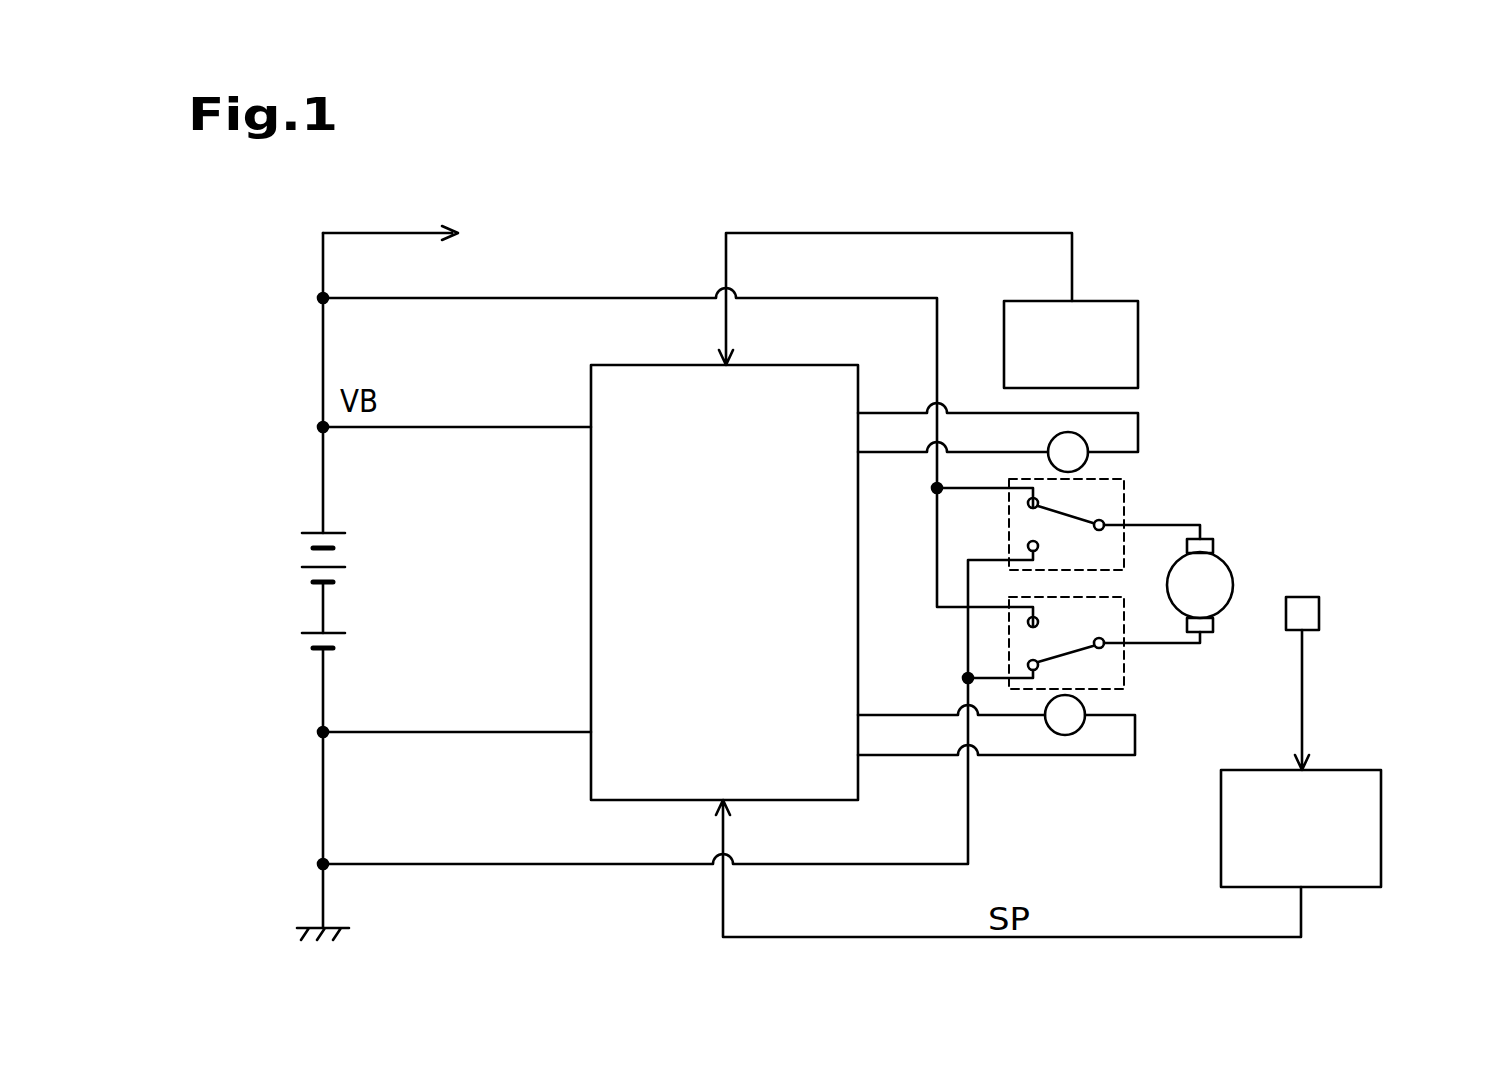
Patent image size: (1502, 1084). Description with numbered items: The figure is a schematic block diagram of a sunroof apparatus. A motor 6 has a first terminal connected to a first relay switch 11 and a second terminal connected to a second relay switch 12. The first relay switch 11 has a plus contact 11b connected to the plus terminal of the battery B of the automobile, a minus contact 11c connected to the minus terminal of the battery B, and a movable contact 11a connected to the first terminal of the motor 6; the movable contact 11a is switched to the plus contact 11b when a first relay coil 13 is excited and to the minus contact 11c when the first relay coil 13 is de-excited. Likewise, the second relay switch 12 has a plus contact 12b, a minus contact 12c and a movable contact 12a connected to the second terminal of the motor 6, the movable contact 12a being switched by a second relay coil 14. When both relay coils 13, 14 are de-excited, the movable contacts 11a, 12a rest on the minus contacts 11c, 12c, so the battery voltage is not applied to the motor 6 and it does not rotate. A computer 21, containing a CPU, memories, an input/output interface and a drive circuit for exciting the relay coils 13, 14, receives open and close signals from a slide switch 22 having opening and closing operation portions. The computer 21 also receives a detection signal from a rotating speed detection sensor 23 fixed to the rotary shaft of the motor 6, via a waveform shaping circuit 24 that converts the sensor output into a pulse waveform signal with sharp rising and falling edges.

The battery B is at (312, 533).
The computer 21 is at (628, 374).
The slide switch 22 is at (1138, 343).
The first relay coil 13 is at (1050, 438).
The second relay coil 14 is at (1050, 727).
The first relay switch 11 is at (1033, 526).
The movable contact 11a is at (1060, 513).
The plus contact 11b is at (1026, 505).
The minus contact 11c is at (1026, 547).
The second relay switch 12 is at (1039, 643).
The movable contact 12a is at (1062, 655).
The plus contact 12b is at (1026, 623).
The minus contact 12c is at (1026, 666).
The motor 6 is at (1228, 560).
The rotating speed detection sensor 23 is at (1319, 612).
The waveform shaping circuit 24 is at (1381, 828).